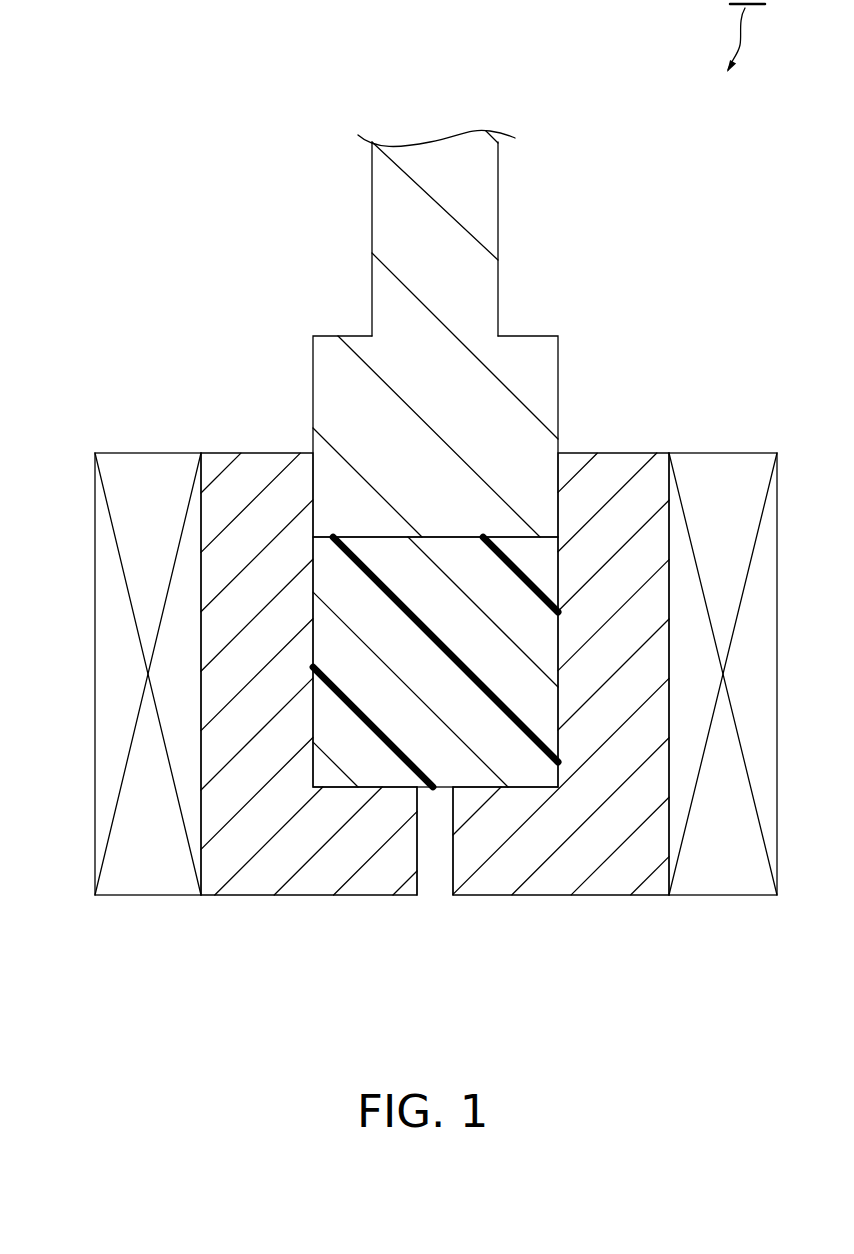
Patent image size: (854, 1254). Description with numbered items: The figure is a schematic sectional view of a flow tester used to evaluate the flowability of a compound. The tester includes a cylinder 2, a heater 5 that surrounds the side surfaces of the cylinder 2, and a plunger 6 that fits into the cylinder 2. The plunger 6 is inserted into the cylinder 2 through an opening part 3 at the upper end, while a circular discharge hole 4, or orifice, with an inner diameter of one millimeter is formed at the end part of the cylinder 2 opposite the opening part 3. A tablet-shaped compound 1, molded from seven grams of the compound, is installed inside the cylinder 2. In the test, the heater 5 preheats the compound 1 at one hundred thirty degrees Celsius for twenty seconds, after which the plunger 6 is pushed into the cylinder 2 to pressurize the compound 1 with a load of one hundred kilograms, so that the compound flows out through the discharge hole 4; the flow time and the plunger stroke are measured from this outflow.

The compound 1 is at (373, 765).
The cylinder 2 is at (253, 895).
The opening part 3 is at (318, 492).
The discharge hole 4 is at (450, 848).
The heater 5 is at (155, 453).
The plunger 6 is at (498, 232).